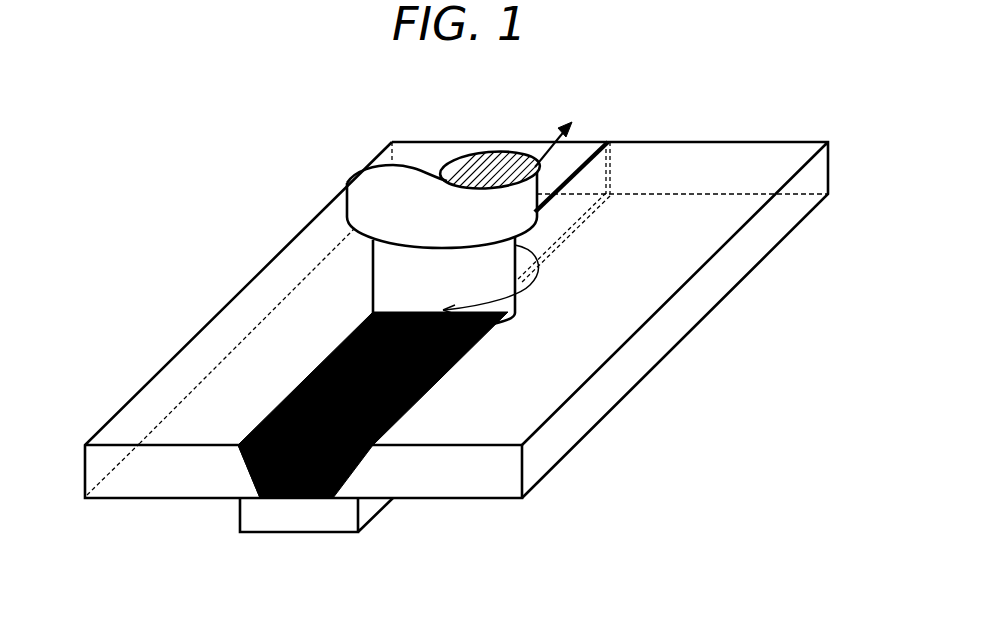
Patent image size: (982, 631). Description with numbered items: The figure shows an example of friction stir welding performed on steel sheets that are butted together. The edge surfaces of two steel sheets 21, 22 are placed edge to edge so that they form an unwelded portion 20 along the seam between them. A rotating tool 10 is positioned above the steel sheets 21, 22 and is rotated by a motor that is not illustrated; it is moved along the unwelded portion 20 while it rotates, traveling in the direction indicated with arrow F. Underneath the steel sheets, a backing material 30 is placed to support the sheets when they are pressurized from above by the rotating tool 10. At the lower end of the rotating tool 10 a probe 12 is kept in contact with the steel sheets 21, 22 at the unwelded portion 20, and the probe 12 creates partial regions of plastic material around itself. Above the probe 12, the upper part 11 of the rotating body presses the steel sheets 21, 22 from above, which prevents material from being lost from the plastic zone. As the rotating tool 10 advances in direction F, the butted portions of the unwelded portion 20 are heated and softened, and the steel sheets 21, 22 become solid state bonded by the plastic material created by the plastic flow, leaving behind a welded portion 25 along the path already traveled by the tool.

The rotating tool 10 is at (393, 207).
The upper part of rotating body 11 is at (392, 287).
The probe 12 is at (450, 365).
The unwelded portion 20 is at (608, 143).
The steel sheet 21 is at (228, 323).
The steel sheet 22 is at (687, 250).
The welded portion 25 is at (242, 470).
The backing material 30 is at (305, 518).
The arrow indicating tool movement direction F is at (560, 132).